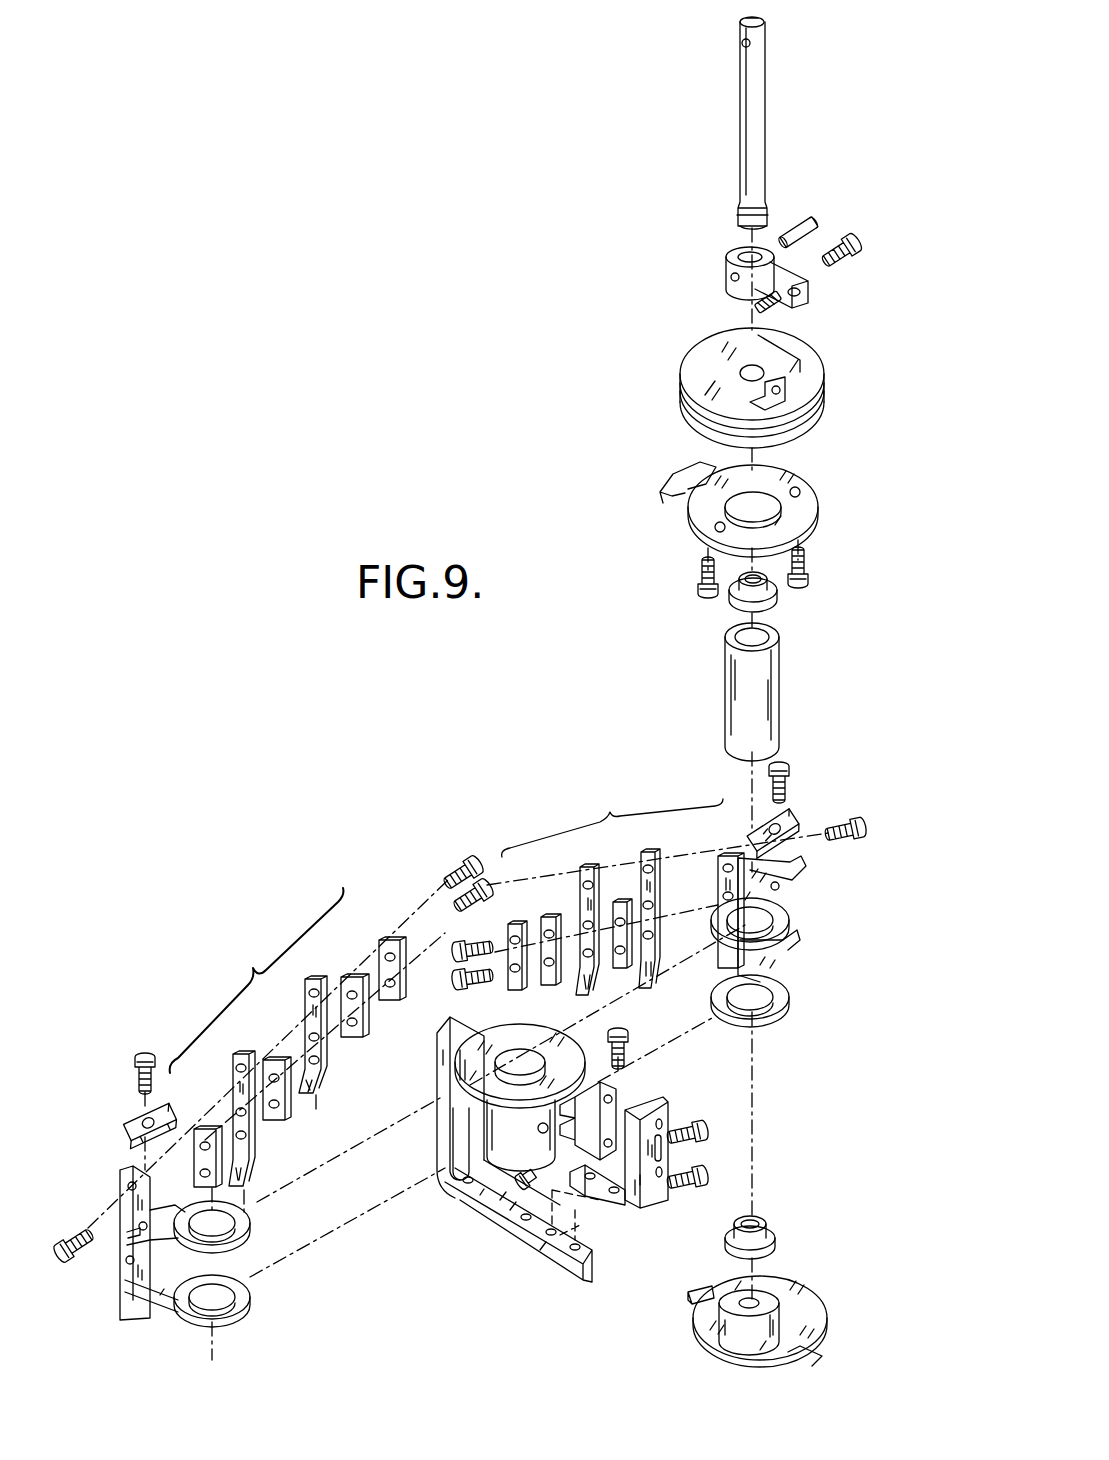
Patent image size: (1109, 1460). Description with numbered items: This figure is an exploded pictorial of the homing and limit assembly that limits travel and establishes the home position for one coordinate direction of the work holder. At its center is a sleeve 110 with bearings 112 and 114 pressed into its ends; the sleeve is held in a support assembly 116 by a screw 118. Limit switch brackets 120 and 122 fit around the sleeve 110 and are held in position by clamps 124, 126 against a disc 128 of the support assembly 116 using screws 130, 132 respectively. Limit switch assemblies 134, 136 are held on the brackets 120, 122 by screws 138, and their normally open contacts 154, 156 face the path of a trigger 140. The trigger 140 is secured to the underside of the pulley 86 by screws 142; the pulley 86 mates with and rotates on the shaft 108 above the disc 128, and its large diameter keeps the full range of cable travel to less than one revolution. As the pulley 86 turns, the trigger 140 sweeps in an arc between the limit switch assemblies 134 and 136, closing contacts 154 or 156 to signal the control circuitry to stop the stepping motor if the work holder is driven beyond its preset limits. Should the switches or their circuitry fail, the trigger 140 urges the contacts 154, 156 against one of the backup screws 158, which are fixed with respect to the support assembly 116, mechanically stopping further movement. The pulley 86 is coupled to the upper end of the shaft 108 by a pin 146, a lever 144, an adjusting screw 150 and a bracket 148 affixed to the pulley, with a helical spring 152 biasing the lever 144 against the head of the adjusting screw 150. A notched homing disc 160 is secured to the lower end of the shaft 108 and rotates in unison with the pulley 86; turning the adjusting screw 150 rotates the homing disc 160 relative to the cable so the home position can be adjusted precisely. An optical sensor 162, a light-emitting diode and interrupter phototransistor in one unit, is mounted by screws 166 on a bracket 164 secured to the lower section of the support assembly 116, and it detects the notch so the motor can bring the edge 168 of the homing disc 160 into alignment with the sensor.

The pulley 86 is at (698, 360).
The shaft 108 is at (748, 115).
The sleeve 110 is at (734, 682).
The bearing 112 is at (741, 606).
The bearing 114 is at (770, 1234).
The support assembly 116 is at (438, 1078).
The screw 118 is at (521, 1186).
The limit switch bracket 120 is at (130, 1306).
The limit switch bracket 122 is at (772, 958).
The clamp 124 is at (126, 1122).
The clamp 126 is at (794, 838).
The disc 128 is at (497, 1030).
The screw 130 is at (133, 1062).
The screw 132 is at (793, 768).
The limit switch assembly 134 is at (266, 966).
The limit switch assembly 136 is at (596, 820).
The screws 138 is at (483, 896).
The trigger 140 is at (702, 516).
The screws 142 is at (696, 582).
The lever 144 is at (736, 272).
The pin 146 is at (804, 224).
The bracket 148 is at (770, 403).
The adjusting screw 150 is at (848, 252).
The helical spring 152 is at (755, 306).
The contacts 154 is at (314, 1088).
The contacts 156 is at (584, 992).
The backup screws 158 is at (850, 840).
The homing disc 160 is at (718, 1283).
The optical sensor 162 is at (616, 1094).
The bracket 164 is at (667, 1116).
The screws 166 is at (715, 1145).
The edge 168 is at (692, 1304).